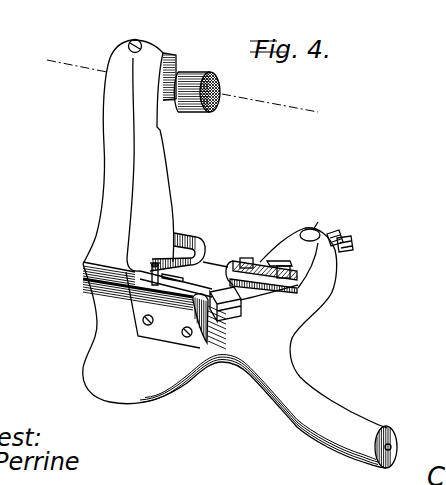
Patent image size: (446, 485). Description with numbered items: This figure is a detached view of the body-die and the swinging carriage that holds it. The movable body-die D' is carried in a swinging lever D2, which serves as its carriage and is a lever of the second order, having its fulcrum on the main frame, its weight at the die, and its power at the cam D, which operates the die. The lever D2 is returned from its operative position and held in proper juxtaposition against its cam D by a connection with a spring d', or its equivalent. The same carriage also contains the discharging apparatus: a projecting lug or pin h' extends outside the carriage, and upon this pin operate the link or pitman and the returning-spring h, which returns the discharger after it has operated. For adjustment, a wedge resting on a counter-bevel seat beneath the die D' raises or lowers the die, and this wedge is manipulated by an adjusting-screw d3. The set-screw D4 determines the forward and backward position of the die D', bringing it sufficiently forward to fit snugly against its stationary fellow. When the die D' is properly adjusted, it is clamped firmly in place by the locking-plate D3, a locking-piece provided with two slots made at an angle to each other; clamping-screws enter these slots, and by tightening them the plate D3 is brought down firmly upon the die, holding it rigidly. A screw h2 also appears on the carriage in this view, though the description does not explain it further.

The spring d' is at (176, 31).
The cam D is at (191, 90).
The swinging lever D2 is at (240, 254).
The spring h is at (177, 246).
The projecting lug or pin h' is at (149, 262).
The screw h2 is at (195, 340).
The locking-plate D3 is at (253, 266).
The movable body-die D' is at (241, 304).
The set-screw D4 is at (337, 232).
The adjusting-screw d3 is at (353, 246).